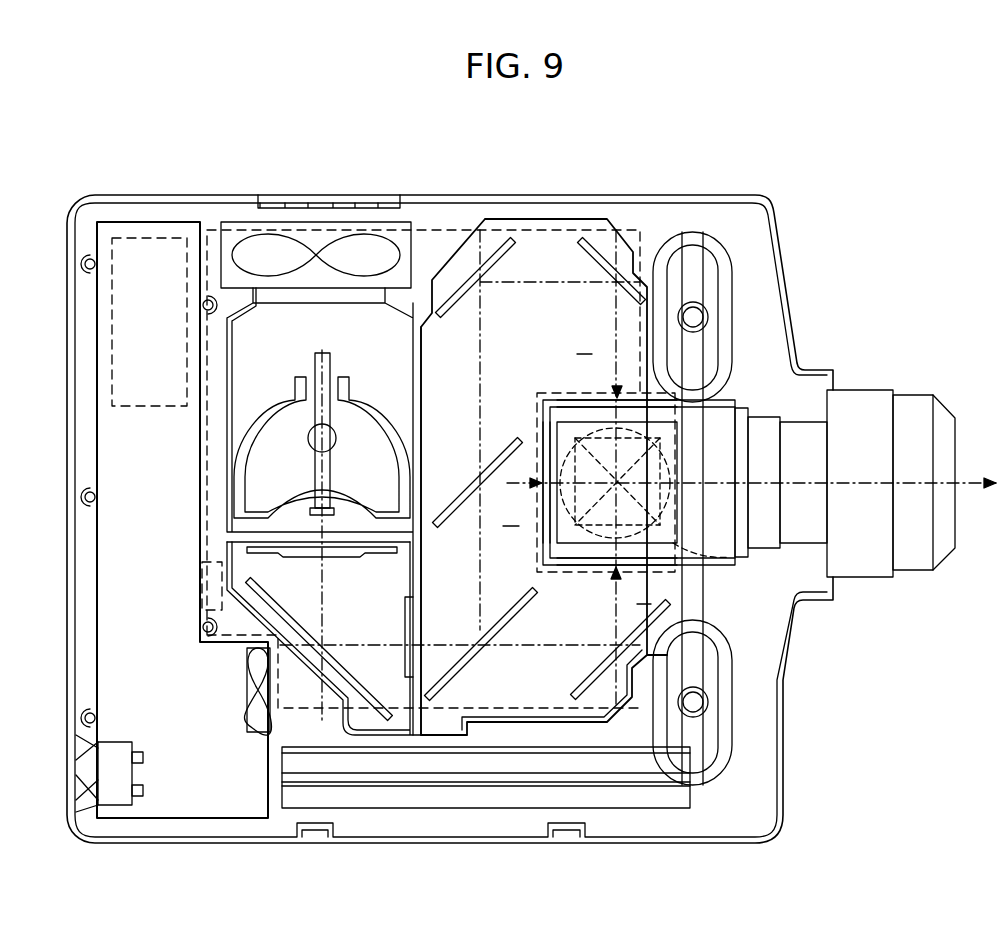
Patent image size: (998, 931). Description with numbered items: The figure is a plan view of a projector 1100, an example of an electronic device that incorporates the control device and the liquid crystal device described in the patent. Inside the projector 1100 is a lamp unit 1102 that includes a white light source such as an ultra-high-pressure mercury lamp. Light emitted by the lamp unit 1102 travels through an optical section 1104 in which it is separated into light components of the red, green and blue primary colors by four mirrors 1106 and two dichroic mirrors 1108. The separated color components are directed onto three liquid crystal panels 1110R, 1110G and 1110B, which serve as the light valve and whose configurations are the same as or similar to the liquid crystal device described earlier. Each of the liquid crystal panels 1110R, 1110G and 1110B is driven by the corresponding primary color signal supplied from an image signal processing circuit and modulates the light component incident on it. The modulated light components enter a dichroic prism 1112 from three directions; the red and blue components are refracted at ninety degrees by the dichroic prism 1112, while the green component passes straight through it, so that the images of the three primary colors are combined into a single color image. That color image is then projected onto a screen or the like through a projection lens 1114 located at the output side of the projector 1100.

The projector 1100 is at (792, 197).
The lamp unit 1102 is at (367, 338).
The optical chamber 1104 is at (485, 220).
The mirrors 1106 is at (593, 258).
The dichroic mirrors 1108 is at (510, 615).
The liquid crystal panel 1110R is at (580, 398).
The liquid crystal panel 1110G is at (550, 455).
The liquid crystal panel 1110B is at (578, 566).
The dichroic prism 1112 is at (735, 566).
The projection lens 1114 is at (923, 405).